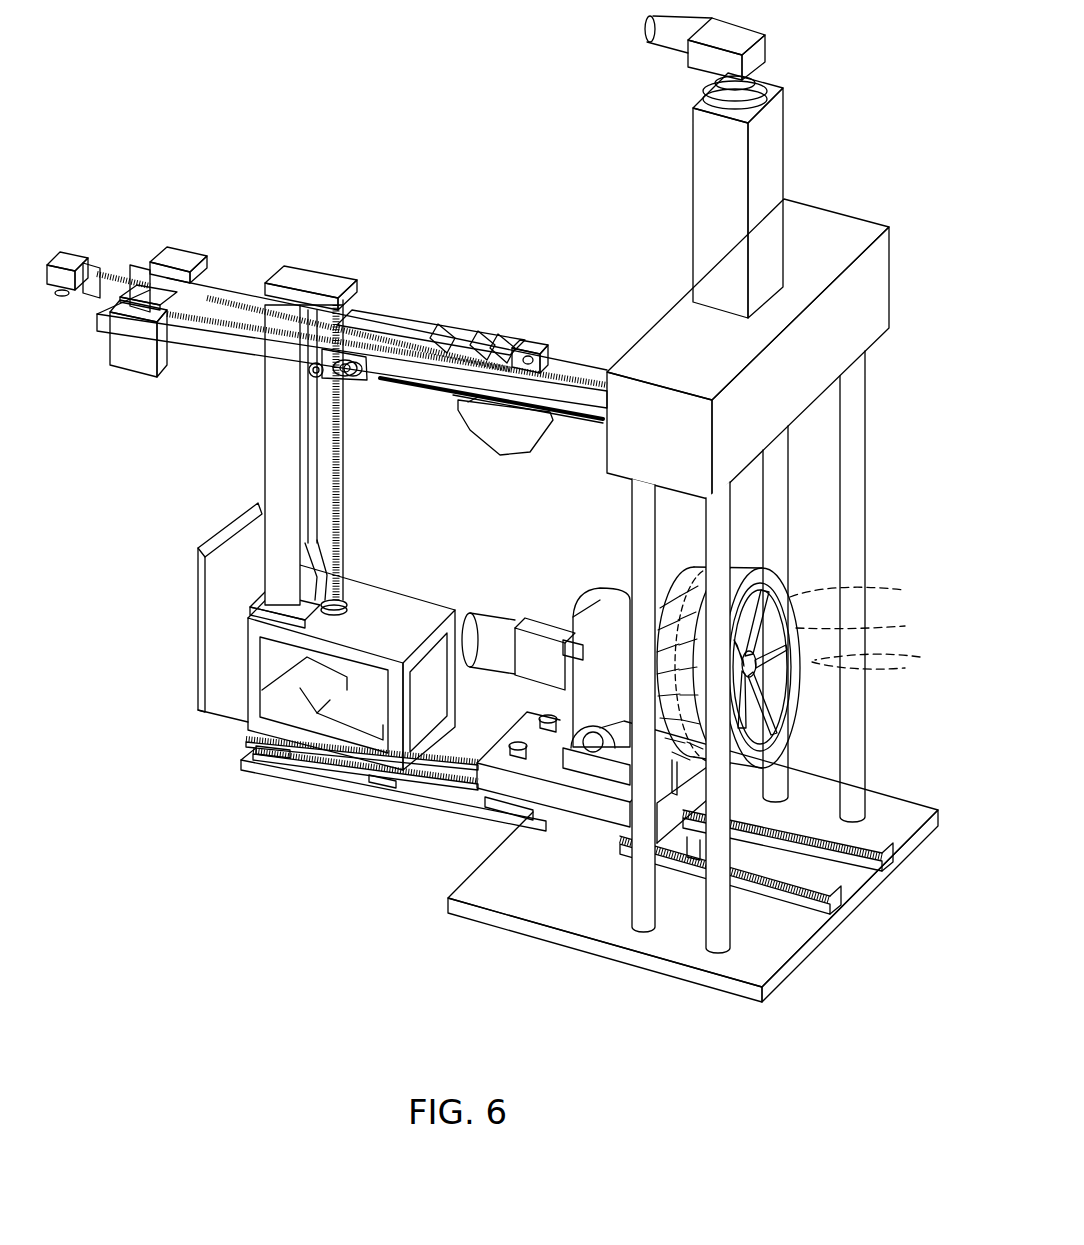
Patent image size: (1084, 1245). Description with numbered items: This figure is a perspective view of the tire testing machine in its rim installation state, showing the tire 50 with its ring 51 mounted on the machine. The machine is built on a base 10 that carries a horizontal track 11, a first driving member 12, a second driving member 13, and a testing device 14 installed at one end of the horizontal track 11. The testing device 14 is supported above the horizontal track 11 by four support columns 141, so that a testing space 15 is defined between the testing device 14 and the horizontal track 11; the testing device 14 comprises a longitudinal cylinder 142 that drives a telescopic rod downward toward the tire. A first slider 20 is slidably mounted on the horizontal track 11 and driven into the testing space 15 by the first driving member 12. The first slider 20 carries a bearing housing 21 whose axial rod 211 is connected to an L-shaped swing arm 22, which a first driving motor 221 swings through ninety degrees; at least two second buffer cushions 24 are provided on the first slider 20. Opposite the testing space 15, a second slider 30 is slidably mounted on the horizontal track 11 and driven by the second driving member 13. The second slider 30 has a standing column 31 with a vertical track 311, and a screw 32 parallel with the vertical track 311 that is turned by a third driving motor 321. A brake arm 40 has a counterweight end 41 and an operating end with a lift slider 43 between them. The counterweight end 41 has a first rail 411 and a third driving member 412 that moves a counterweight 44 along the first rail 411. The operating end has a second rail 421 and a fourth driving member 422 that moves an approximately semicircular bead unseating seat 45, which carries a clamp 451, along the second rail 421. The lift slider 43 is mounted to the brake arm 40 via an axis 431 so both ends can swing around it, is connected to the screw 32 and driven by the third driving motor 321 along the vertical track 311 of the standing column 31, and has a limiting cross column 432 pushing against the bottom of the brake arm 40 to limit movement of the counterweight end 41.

The base 10 is at (815, 972).
The horizontal track 11 is at (840, 880).
The first driving member 12 is at (462, 762).
The second driving member 13 is at (440, 768).
The testing device 14 is at (765, 484).
The support columns 141 is at (852, 517).
The longitudinal cylinder 142 is at (715, 158).
The testing space 15 is at (877, 629).
The first slider 20 is at (540, 823).
The bearing housing 21 is at (529, 816).
The axial rod 211 is at (595, 748).
The L-shaped swing arm 22 is at (598, 640).
The first driving motor 221 is at (505, 635).
The second buffer cushions 24 is at (510, 752).
The second slider 30 is at (290, 631).
The standing column 31 is at (294, 440).
The vertical track 311 is at (312, 497).
The screw 32 is at (337, 470).
The third driving motor 321 is at (305, 657).
The brake arm 40 is at (329, 347).
The counterweight end 41 is at (87, 310).
The first rail 411 is at (195, 290).
The third driving member 412 is at (233, 285).
The second rail 421 is at (583, 420).
The fourth driving member 422 is at (578, 380).
The lift slider 43 is at (315, 394).
The axis 431 is at (365, 386).
The limiting cross column 432 is at (310, 370).
The counterweight 44 is at (130, 360).
The bead unseating seat 45 is at (510, 440).
The clamp 451 is at (527, 350).
The tire 50 is at (793, 667).
The ring 51 is at (800, 620).